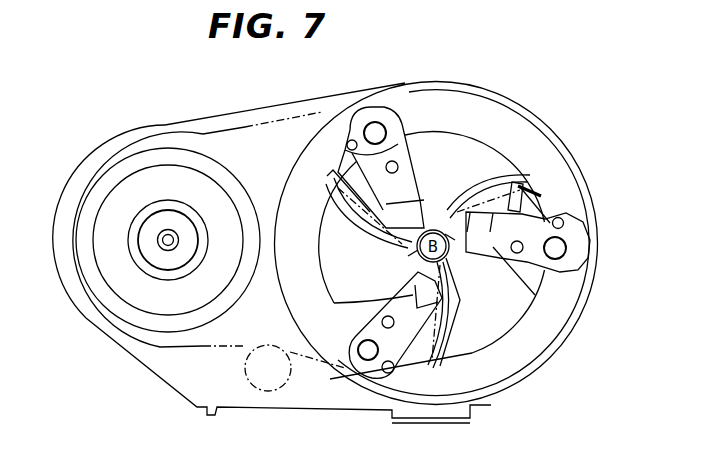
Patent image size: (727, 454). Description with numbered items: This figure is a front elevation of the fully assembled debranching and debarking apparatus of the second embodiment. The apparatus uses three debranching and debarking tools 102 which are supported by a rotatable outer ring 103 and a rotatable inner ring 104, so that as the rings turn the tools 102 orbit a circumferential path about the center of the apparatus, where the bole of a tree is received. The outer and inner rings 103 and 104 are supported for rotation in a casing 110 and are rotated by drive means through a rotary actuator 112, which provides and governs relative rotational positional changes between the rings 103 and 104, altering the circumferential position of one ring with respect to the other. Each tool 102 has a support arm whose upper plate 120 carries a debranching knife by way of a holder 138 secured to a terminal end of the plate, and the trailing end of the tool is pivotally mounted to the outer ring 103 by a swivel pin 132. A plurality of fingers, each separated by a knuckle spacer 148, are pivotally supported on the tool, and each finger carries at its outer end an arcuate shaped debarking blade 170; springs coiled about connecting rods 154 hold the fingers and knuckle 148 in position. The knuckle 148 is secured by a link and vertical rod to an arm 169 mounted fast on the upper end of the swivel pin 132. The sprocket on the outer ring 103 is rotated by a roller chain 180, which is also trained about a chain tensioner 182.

The casing 110 is at (257, 107).
The rotary actuator 112 is at (175, 220).
The roller chain 180 is at (298, 136).
The knuckle spacer 148 is at (350, 177).
The swivel pin 132 is at (378, 132).
The debarking blade 170 is at (456, 205).
The connecting rod 154 is at (358, 206).
The upper plate 120 is at (497, 243).
The holder 138 is at (452, 272).
The debranching and debarking tool 102 is at (354, 380).
The arm 169 is at (362, 348).
The chain tensioner 182 is at (240, 376).
The outer ring 103 is at (557, 322).
The inner ring 104 is at (527, 323).